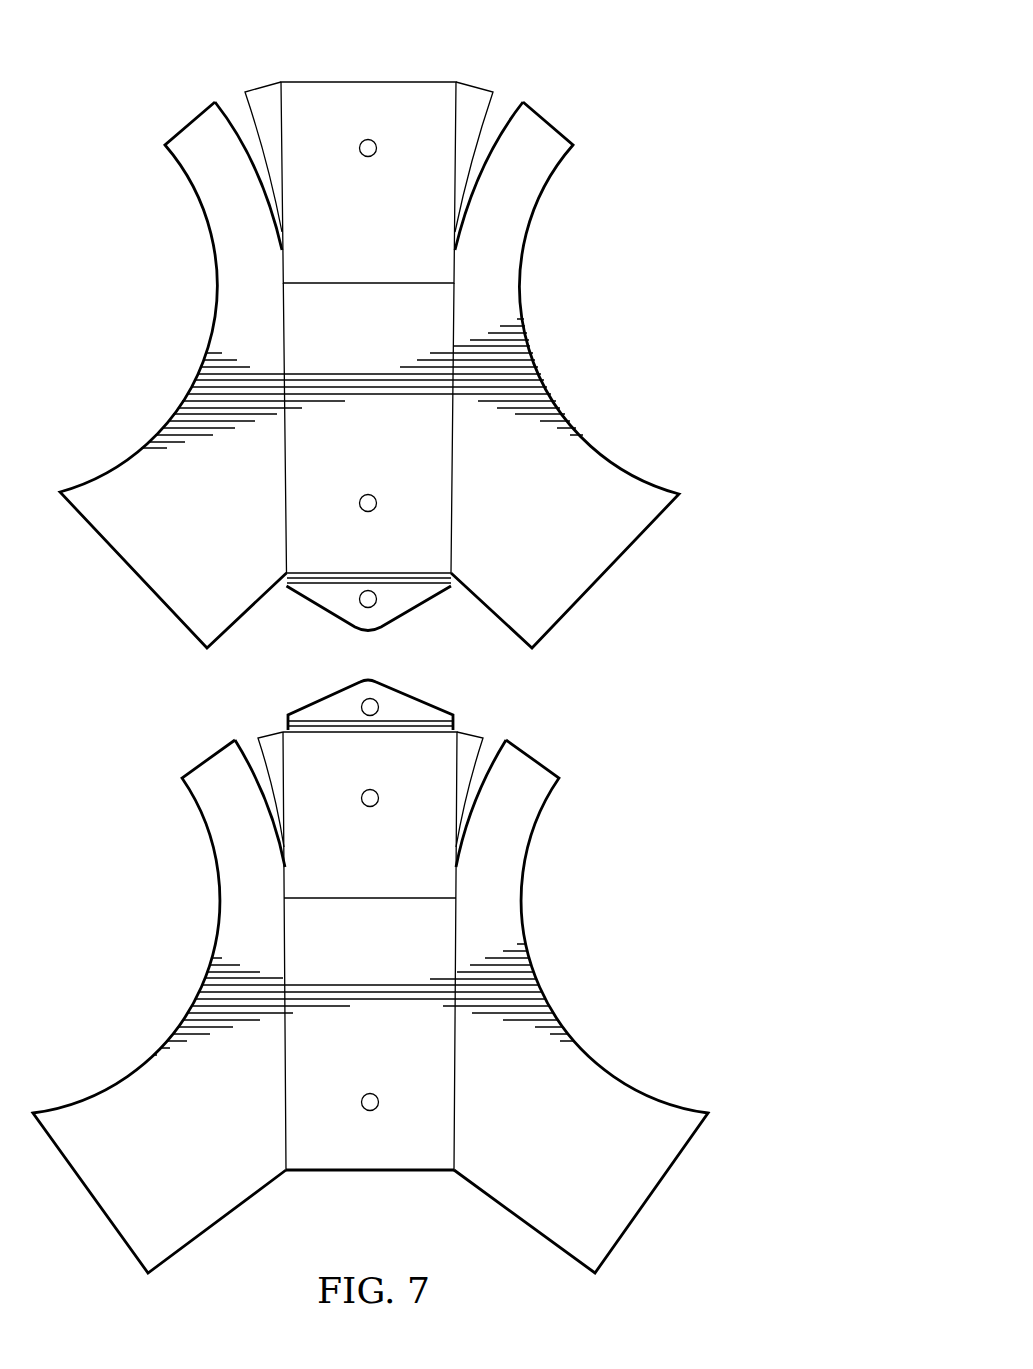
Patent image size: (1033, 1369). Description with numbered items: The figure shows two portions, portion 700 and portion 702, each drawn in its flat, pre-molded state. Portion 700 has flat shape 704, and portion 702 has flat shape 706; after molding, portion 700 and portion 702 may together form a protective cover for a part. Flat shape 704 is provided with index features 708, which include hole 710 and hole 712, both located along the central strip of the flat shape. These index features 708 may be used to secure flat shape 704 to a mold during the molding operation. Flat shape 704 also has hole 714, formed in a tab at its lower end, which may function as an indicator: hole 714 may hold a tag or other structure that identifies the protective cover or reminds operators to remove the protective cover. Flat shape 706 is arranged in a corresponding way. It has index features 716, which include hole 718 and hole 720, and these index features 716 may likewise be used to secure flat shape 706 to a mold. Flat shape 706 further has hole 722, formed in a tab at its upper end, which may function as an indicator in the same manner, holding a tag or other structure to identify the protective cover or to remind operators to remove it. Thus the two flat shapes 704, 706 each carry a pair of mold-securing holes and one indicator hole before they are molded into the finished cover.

The portion 700 is at (369, 324).
The portion 702 is at (370, 968).
The flat shape 704 is at (228, 322).
The flat shape 706 is at (236, 921).
The index features 708 is at (321, 56).
The hole 710 is at (369, 158).
The hole 712 is at (369, 494).
The hole 714 is at (352, 607).
The index features 716 is at (338, 1190).
The hole 718 is at (370, 1093).
The hole 720 is at (370, 808).
The hole 722 is at (379, 704).